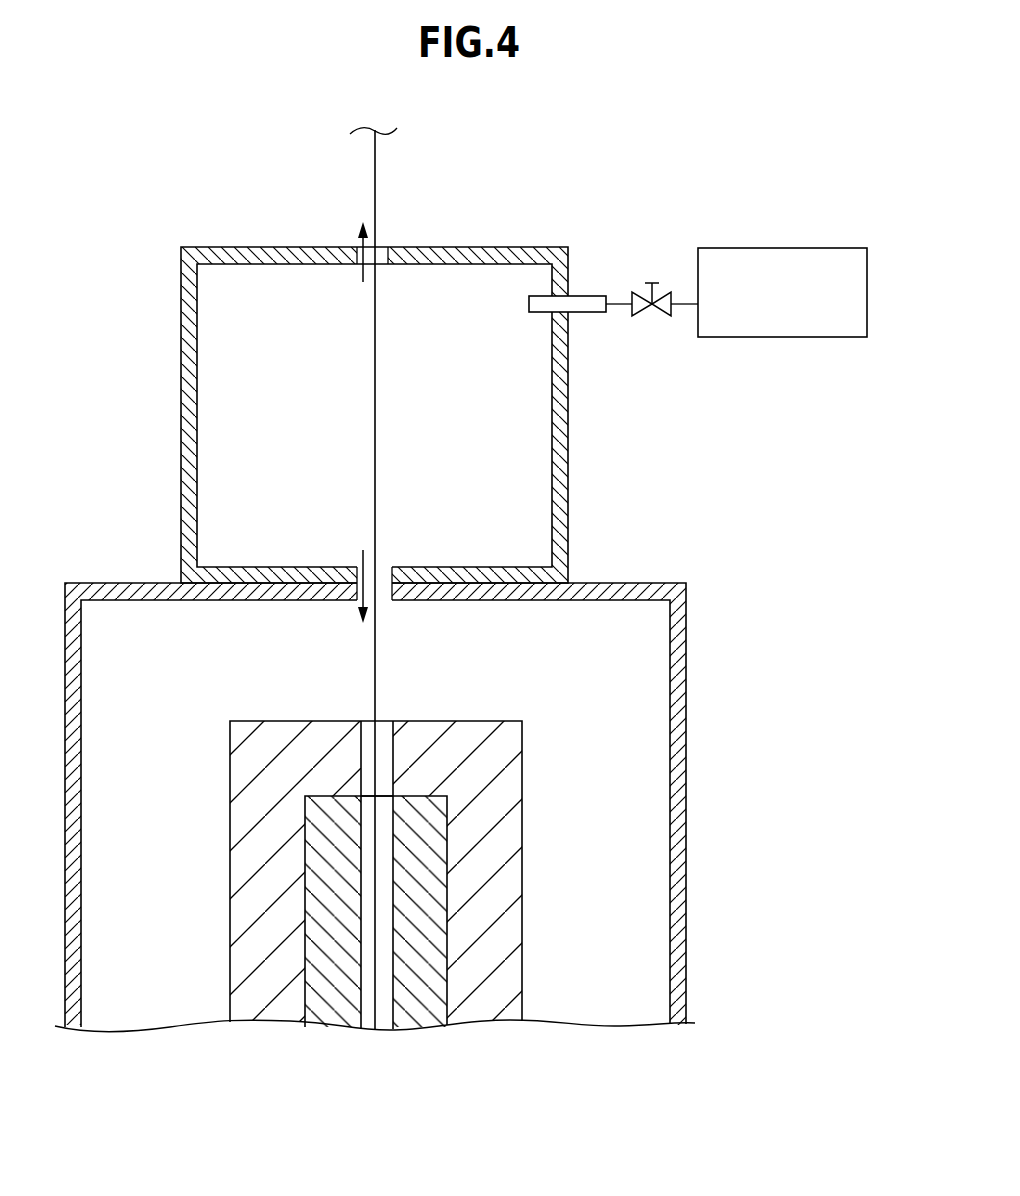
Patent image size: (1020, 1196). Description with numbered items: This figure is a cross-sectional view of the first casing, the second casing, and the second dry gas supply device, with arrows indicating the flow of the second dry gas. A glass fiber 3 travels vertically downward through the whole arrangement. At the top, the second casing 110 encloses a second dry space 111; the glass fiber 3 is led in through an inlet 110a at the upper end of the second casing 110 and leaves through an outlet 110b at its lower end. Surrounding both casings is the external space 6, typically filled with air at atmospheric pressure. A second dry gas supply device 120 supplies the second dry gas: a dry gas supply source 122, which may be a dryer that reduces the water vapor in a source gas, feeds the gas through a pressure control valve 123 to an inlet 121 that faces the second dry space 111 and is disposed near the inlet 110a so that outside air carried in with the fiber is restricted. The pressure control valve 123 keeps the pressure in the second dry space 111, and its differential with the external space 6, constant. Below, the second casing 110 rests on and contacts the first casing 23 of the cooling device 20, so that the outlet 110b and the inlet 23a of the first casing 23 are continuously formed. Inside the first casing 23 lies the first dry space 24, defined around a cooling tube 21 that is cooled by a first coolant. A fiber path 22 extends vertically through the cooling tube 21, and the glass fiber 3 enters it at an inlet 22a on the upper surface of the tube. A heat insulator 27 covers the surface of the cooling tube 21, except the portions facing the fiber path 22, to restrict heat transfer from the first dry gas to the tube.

The glass fiber 3 is at (376, 159).
The external space 6 is at (199, 223).
The second casing 110 is at (530, 247).
The inlet 110a is at (383, 258).
The outlet 110b is at (383, 572).
The second dry space 111 is at (251, 420).
The second dry gas supply device 120 is at (697, 277).
The inlet 121 is at (529, 303).
The dry gas supply source 122 is at (782, 248).
The pressure control valve 123 is at (653, 283).
The cooling device 20 is at (416, 807).
The cooling tube 21 is at (438, 902).
The fiber path 22 is at (385, 973).
The inlet 22a is at (383, 797).
The first casing 23 is at (683, 913).
The inlet 23a is at (383, 600).
The first dry space 24 is at (158, 806).
The heat insulator 27 is at (238, 908).